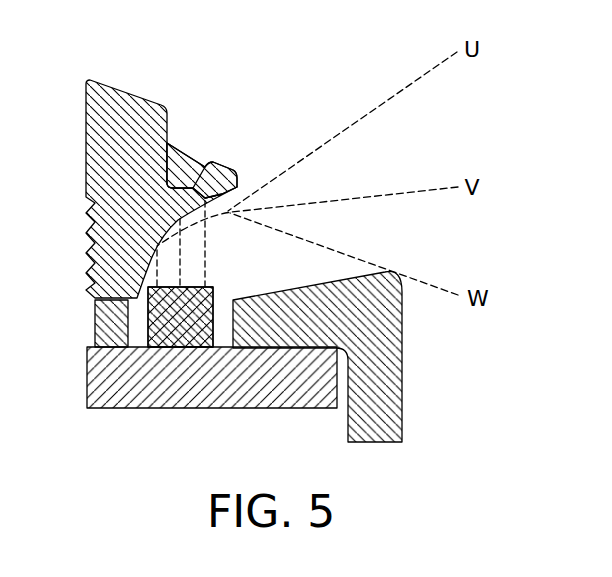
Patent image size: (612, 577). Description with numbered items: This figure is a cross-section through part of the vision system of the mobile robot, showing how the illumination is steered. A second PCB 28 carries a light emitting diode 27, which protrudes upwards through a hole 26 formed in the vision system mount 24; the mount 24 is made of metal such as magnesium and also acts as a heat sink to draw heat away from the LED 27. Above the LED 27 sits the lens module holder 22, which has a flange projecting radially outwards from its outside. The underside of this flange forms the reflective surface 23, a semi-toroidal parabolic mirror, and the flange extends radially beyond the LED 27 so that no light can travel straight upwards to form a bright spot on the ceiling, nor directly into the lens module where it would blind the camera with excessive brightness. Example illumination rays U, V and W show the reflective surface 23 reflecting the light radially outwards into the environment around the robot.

The lens module holder 22 is at (125, 107).
The reflective surface 23 is at (214, 170).
The vision system mount 24 is at (384, 407).
The hole 26 is at (139, 313).
The light emitting diode 27 is at (167, 331).
The second PCB 28 is at (285, 383).